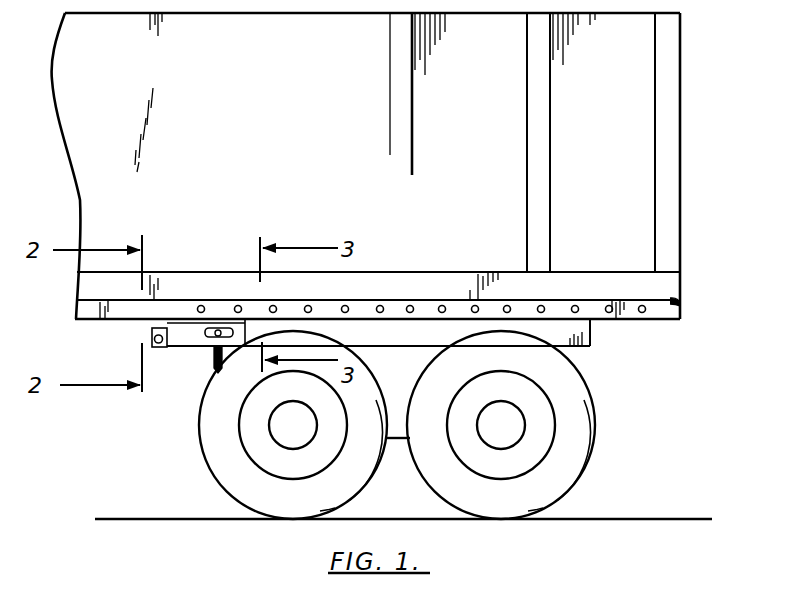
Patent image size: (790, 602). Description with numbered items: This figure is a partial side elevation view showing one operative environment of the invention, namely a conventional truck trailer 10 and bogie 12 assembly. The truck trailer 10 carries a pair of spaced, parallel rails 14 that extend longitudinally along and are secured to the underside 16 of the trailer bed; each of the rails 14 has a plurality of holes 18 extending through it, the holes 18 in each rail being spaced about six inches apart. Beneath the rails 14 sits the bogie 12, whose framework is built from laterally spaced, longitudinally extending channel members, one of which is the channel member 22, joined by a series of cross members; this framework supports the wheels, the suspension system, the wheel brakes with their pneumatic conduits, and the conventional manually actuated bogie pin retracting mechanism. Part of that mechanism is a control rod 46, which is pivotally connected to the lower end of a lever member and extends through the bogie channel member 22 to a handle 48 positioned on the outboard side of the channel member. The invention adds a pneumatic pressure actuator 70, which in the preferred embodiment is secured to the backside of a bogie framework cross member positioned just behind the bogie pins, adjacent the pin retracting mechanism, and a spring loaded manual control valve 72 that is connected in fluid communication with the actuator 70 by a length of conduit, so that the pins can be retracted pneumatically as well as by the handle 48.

The truck trailer 10 is at (684, 139).
The bogie 12 is at (612, 423).
The rails 14 is at (656, 321).
The underside 16 is at (682, 303).
The holes 18 is at (410, 306).
The channel member 22 is at (568, 347).
The control rod 46 is at (214, 357).
The handle 48 is at (220, 326).
The pneumatic pressure actuator 70 is at (243, 338).
The manual control valve 72 is at (150, 330).